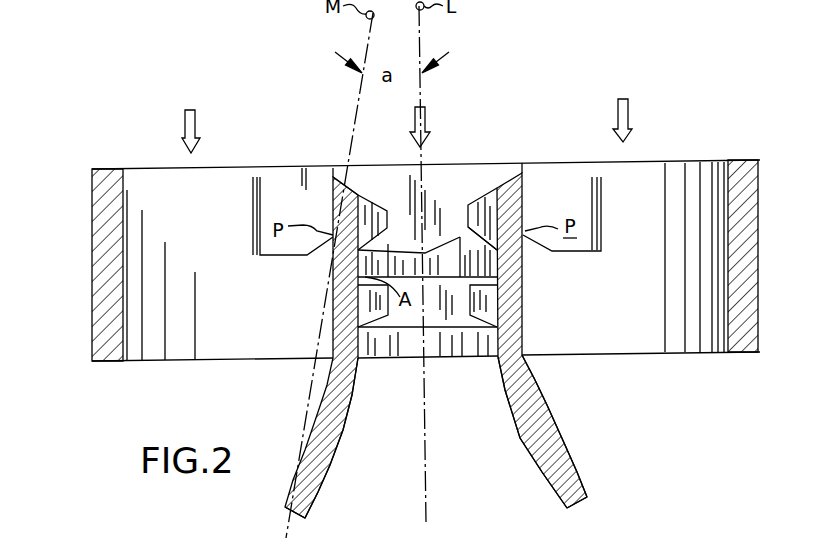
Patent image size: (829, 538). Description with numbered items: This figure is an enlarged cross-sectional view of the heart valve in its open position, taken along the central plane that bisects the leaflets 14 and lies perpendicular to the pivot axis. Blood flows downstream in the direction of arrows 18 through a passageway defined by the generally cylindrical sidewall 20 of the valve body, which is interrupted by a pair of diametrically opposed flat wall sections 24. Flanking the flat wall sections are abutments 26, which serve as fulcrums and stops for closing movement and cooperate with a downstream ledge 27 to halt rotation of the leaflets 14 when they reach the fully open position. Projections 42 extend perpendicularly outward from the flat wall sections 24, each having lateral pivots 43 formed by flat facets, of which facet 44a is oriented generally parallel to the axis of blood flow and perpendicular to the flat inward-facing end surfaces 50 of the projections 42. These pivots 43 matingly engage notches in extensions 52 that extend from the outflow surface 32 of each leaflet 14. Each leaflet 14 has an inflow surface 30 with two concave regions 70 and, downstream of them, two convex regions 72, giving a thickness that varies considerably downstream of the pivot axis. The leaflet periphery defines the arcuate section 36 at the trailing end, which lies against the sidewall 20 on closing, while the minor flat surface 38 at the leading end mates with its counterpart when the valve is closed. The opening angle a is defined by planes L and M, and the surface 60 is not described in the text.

The leaflet 14 is at (298, 460).
The arrows 18 is at (188, 115).
The sidewall 20 is at (128, 298).
The flat wall section 24 is at (428, 198).
The abutment 26 is at (333, 212).
The ledge 27 is at (495, 358).
The inflow surface 30 is at (314, 395).
The outflow surface 32 is at (338, 445).
The arcuate peripheral surface 36 is at (290, 505).
The minor flat surface 38 is at (345, 168).
The projection 42 is at (460, 238).
The lateral pivot 43 is at (345, 268).
The facet 44a is at (497, 252).
The end surface 50 is at (385, 240).
The extension 52 is at (375, 205).
The top surface 60 is at (318, 168).
The concave region 70 is at (537, 385).
The convex region 72 is at (583, 475).